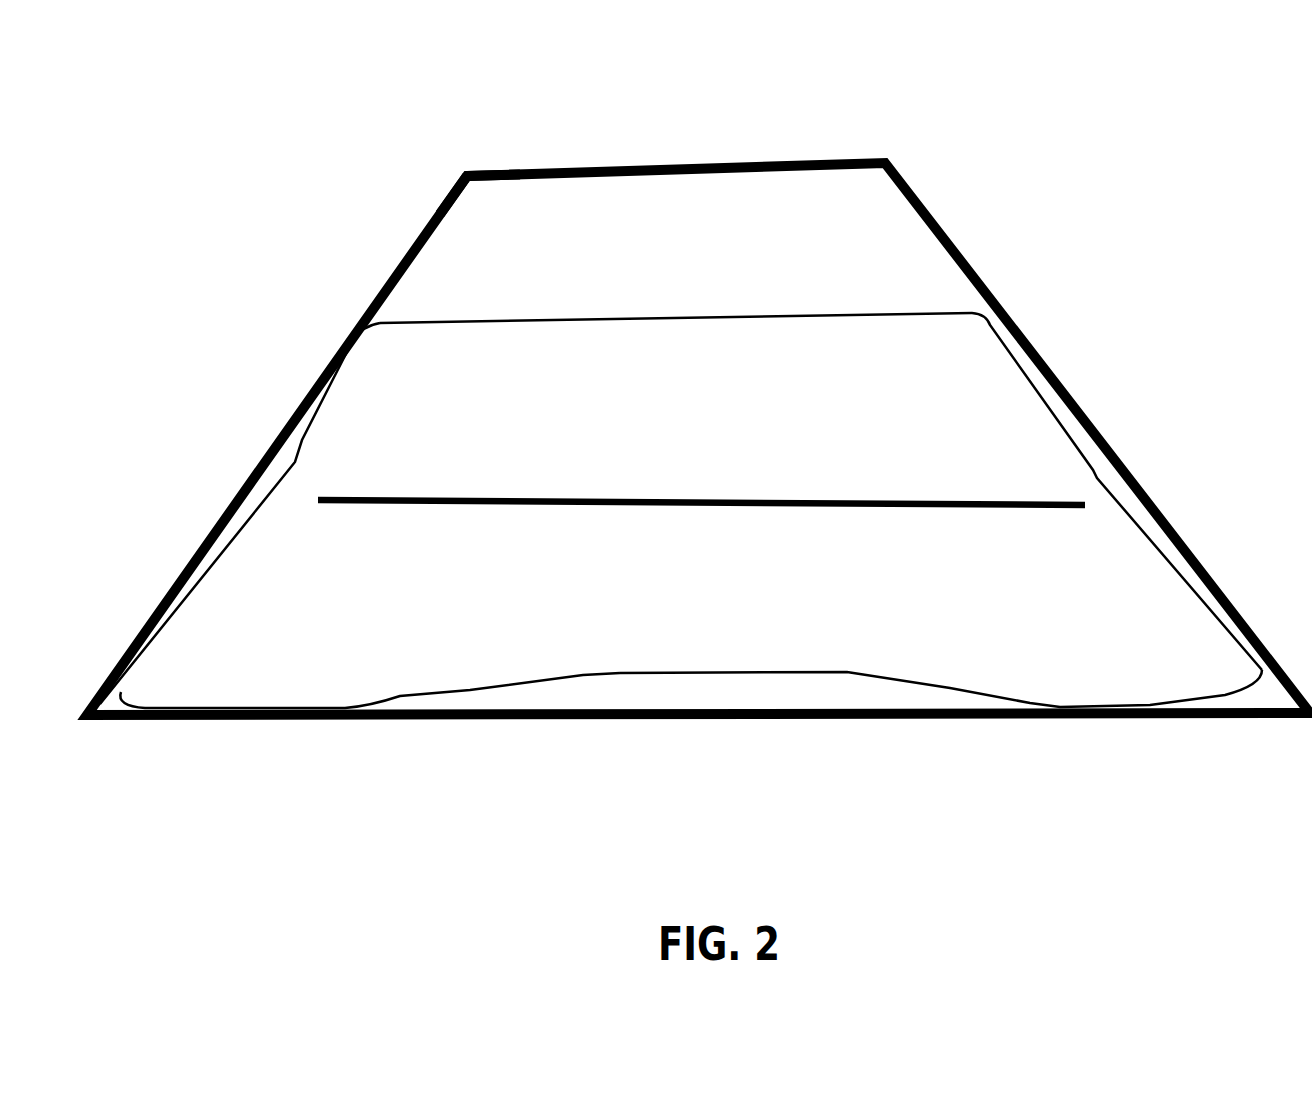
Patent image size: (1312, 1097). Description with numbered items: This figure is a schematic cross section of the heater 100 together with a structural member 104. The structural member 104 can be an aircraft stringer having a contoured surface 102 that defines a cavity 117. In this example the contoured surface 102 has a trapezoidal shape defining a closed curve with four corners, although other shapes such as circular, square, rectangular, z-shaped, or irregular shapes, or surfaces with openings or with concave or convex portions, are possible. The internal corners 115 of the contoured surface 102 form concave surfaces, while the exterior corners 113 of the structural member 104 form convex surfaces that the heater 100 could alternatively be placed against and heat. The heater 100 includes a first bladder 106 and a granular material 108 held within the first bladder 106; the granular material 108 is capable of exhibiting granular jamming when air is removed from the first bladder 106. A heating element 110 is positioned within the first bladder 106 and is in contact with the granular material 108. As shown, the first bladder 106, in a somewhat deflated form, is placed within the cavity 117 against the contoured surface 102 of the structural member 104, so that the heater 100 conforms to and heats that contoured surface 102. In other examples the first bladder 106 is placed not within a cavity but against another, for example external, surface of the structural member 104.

The heater 100 is at (1126, 86).
The contoured surface 102 is at (677, 711).
The structural member 104 is at (846, 165).
The first bladder 106 is at (347, 703).
The granular material 108 is at (995, 464).
The heating element 110 is at (793, 500).
The exterior corners 113 is at (463, 172).
The internal corners 115 is at (125, 690).
The cavity 117 is at (507, 247).